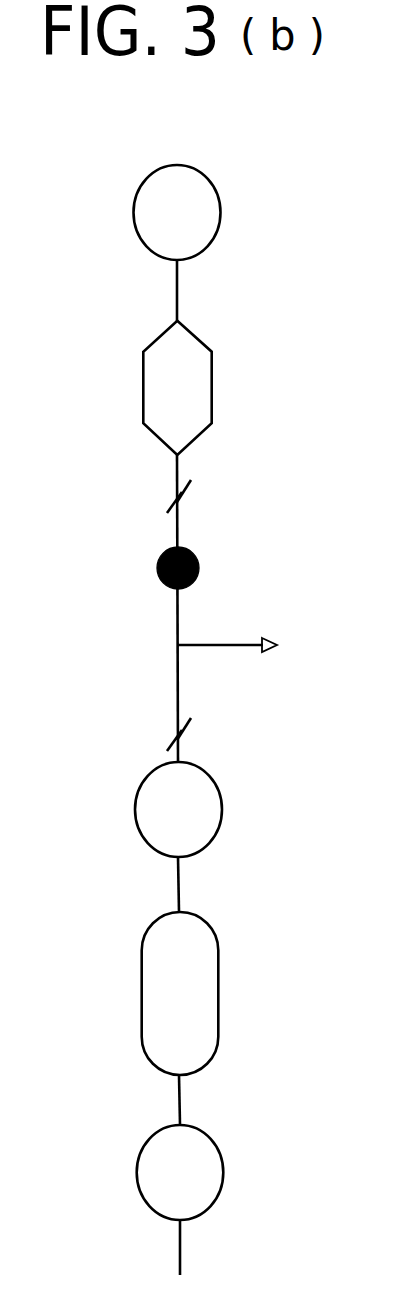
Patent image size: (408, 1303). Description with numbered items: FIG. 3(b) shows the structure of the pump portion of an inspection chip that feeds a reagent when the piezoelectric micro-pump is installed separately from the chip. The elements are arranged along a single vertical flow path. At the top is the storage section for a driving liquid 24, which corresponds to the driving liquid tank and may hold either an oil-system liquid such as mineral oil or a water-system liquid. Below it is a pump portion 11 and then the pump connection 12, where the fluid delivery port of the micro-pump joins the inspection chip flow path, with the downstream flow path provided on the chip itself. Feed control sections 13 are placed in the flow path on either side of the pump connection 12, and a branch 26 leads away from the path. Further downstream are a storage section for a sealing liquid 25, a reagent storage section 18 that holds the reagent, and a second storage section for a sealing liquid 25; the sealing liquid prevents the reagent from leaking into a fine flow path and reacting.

The pump 11 is at (212, 387).
The pump connection 12 is at (200, 567).
The feed control section 13 is at (182, 502).
The reagent storage section 18 is at (218, 993).
The storage section for a driving liquid 24 is at (222, 212).
The storage section for a sealing liquid 25 is at (222, 808).
The discharge line 26 is at (218, 644).